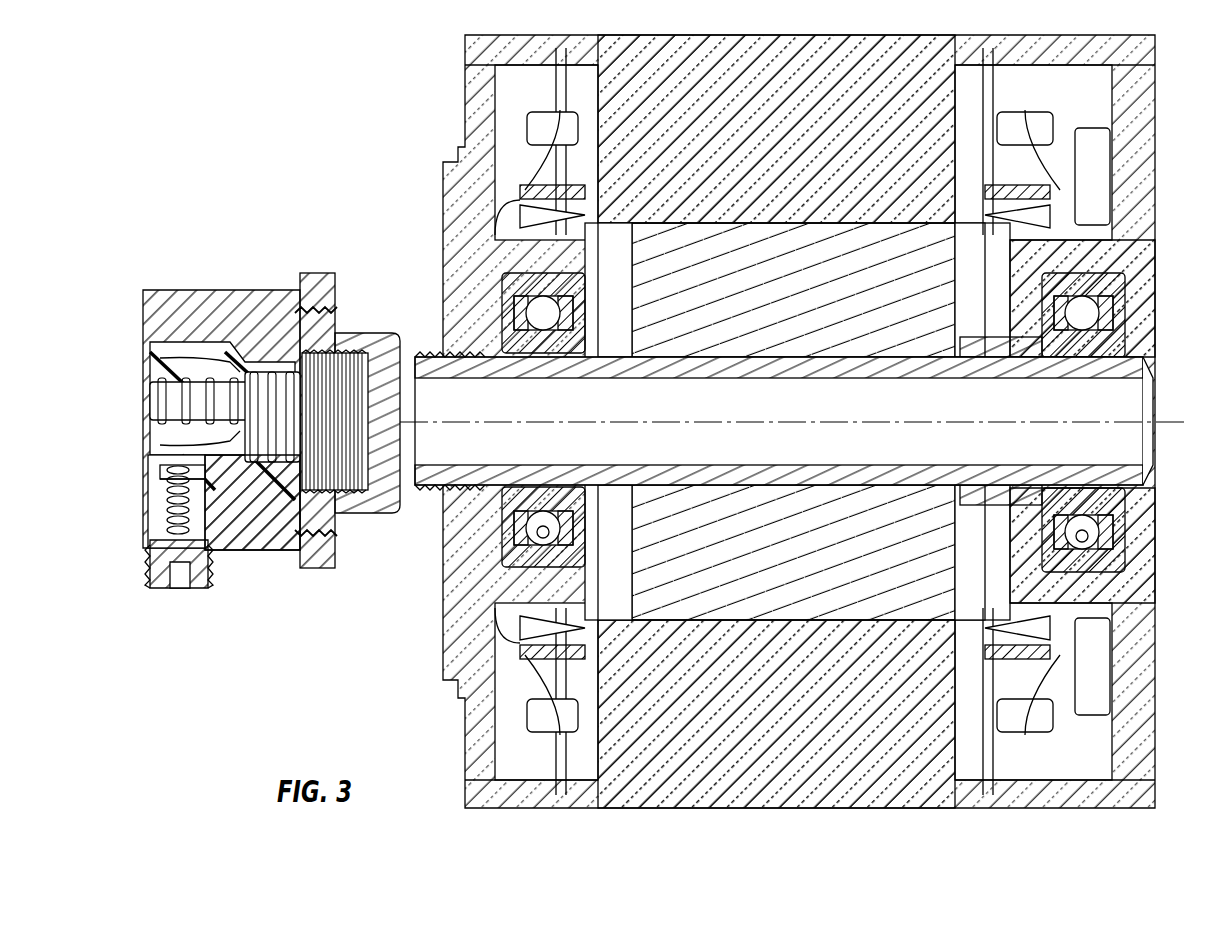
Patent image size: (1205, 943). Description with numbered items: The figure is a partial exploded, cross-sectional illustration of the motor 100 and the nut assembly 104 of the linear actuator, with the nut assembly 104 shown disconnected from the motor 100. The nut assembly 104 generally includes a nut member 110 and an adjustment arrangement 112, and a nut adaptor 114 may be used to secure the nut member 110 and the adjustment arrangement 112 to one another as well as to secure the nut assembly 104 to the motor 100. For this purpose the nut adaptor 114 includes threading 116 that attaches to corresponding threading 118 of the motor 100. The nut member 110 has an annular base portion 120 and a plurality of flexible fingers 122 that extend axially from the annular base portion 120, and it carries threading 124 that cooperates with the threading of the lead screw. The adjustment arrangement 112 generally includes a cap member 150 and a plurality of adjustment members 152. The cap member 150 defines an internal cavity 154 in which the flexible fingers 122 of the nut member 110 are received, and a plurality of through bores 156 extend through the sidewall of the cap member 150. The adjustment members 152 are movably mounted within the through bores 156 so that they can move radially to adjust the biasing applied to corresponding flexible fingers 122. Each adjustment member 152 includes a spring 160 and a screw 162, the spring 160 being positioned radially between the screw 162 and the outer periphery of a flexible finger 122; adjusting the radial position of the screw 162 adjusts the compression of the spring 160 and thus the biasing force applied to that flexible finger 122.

The motor 100 is at (752, 421).
The nut assembly 104 is at (242, 250).
The nut member 110 is at (231, 492).
The adjustment arrangement 112 is at (163, 243).
The nut adaptor 114 is at (365, 507).
The threading 116 is at (378, 453).
The threading 118 is at (438, 352).
The annular base portion 120 is at (264, 330).
The flexible fingers 122 is at (160, 352).
The threading 124 is at (150, 415).
The cap member 150 is at (148, 322).
The adjustment member 152 is at (176, 612).
The internal cavity 154 is at (216, 356).
The through bores 156 is at (160, 513).
The spring 160 is at (163, 481).
The screw 162 is at (150, 566).